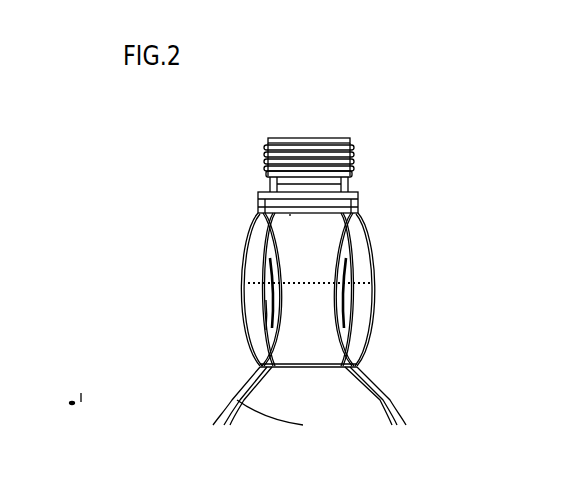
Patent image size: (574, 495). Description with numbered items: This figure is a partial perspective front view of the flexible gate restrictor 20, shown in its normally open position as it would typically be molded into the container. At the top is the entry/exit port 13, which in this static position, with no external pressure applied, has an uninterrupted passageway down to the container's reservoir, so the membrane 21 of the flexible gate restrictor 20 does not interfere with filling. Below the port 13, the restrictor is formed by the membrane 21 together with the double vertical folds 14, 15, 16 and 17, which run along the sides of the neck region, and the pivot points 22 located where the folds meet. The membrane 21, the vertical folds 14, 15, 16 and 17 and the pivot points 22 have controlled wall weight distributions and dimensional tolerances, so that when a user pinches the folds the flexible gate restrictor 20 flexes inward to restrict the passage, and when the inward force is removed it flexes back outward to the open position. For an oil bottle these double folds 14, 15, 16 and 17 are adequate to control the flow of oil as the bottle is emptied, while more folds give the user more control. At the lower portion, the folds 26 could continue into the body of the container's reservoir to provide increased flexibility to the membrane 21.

The flexible gate restrictor 20 is at (158, 163).
The entry/exit port 13 is at (328, 122).
The vertical fold 14 is at (232, 283).
The vertical fold 15 is at (265, 315).
The vertical fold 16 is at (325, 272).
The vertical fold 17 is at (375, 298).
The membrane 21 is at (328, 238).
The pivot points 22 is at (283, 264).
The folds 26 is at (393, 398).